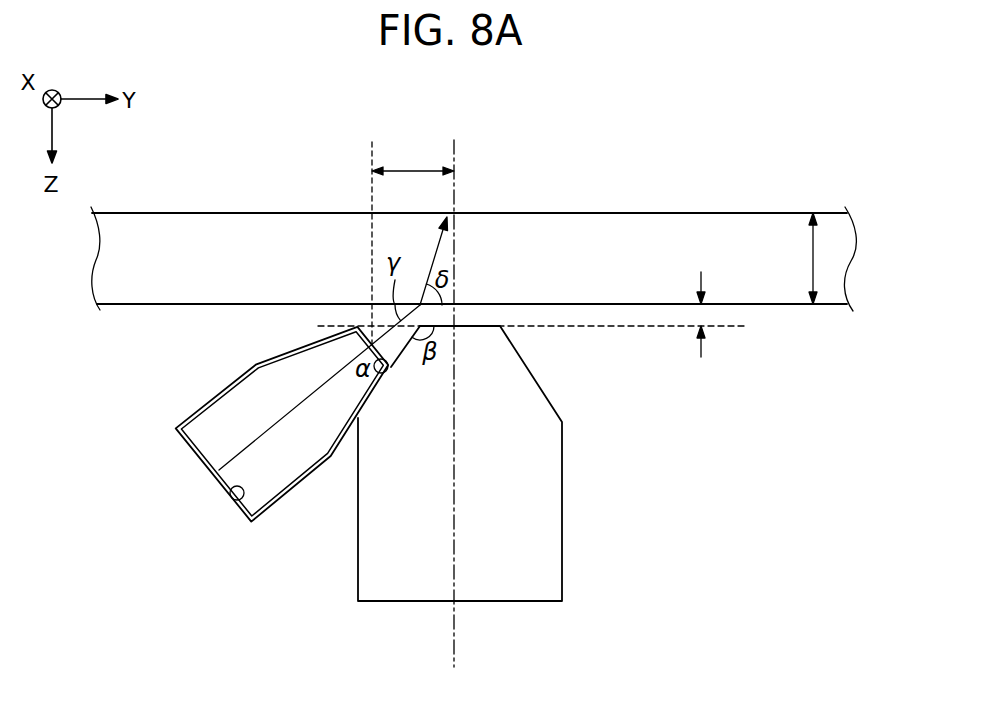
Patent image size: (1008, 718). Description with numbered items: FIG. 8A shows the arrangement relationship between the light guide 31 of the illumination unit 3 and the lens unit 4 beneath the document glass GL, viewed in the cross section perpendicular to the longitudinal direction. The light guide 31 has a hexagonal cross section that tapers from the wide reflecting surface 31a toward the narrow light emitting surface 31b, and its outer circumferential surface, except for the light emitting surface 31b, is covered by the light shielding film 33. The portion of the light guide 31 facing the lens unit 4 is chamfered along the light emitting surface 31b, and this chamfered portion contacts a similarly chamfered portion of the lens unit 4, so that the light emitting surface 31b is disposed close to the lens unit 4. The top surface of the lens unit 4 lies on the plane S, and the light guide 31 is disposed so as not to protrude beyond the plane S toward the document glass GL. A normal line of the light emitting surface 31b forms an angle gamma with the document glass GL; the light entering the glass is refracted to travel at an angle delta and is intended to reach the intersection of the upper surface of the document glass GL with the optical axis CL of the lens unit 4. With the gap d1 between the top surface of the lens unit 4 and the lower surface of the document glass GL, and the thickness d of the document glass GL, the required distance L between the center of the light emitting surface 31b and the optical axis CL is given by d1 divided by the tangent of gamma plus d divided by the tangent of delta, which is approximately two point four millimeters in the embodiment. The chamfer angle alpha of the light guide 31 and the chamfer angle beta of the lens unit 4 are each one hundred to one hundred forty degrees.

The illumination unit 3 is at (273, 455).
The light guide 31 is at (212, 445).
The reflecting surface 31a is at (246, 505).
The light emitting surface 31b is at (389, 363).
The light shielding film 33 is at (272, 513).
The lens unit 4 is at (543, 527).
The document glass GL is at (833, 261).
The plane S is at (620, 328).
The optical axis CL is at (458, 150).
The thickness of the document glass d is at (804, 258).
The distance between the top surface of the lens unit and the lower surface of the d d1 is at (703, 313).
The distance between the center of the light emitting surface and the optical axis L is at (413, 243).